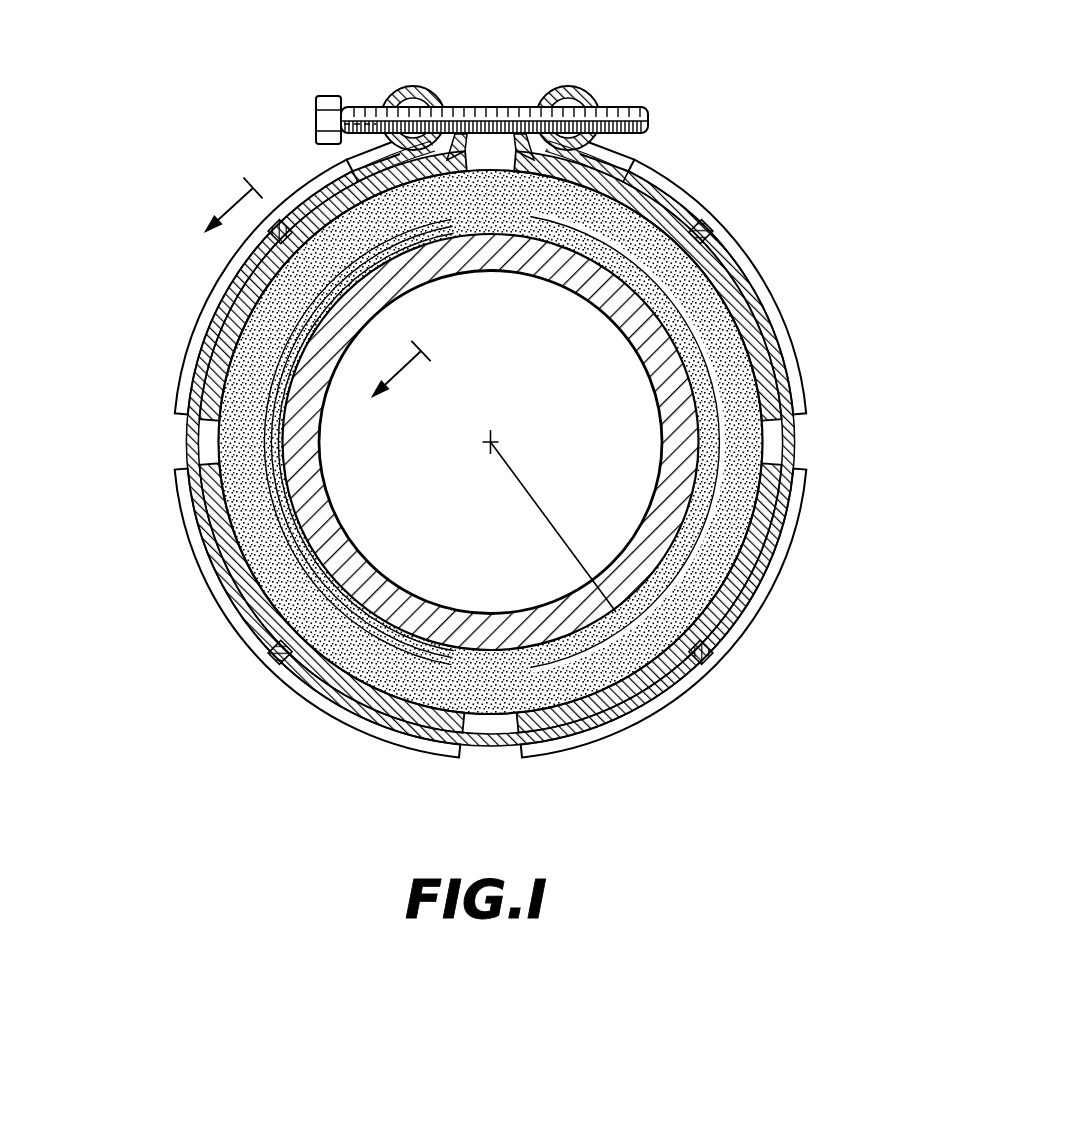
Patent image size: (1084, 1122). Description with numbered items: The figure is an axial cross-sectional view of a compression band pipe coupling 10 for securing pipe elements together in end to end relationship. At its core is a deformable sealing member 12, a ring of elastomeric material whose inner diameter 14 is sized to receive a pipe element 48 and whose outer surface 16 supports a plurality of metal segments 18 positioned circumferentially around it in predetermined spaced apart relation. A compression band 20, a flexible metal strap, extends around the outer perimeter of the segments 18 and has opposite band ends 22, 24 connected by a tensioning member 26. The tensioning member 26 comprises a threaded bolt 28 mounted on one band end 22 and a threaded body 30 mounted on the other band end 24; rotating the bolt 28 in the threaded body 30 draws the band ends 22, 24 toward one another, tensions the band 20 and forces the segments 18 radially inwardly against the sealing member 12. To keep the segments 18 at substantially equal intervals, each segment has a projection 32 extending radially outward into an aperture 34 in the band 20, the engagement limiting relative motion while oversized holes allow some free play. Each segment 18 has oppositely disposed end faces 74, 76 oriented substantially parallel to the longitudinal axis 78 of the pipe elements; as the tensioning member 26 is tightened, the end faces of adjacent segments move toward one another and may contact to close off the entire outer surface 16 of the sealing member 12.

The compression band pipe coupling 10 is at (772, 229).
The deformable sealing member 12 is at (733, 291).
The inner diameter 14 is at (542, 508).
The outer surface 16 is at (758, 460).
The segments 18 is at (196, 352).
The compression band 20 is at (786, 431).
The band end 22 is at (385, 90).
The band end 24 is at (582, 90).
The tensioning member 26 is at (495, 126).
The threaded bolt 28 is at (534, 97).
The threaded body 30 is at (542, 88).
The projection 32 is at (243, 232).
The aperture 34 is at (275, 212).
The pipe element 48 is at (360, 563).
The end face 74 is at (178, 404).
The end face 76 is at (432, 467).
The longitudinal axis 78 is at (479, 438).